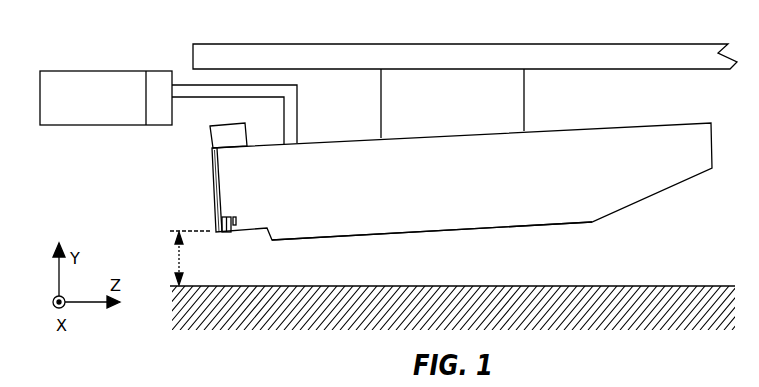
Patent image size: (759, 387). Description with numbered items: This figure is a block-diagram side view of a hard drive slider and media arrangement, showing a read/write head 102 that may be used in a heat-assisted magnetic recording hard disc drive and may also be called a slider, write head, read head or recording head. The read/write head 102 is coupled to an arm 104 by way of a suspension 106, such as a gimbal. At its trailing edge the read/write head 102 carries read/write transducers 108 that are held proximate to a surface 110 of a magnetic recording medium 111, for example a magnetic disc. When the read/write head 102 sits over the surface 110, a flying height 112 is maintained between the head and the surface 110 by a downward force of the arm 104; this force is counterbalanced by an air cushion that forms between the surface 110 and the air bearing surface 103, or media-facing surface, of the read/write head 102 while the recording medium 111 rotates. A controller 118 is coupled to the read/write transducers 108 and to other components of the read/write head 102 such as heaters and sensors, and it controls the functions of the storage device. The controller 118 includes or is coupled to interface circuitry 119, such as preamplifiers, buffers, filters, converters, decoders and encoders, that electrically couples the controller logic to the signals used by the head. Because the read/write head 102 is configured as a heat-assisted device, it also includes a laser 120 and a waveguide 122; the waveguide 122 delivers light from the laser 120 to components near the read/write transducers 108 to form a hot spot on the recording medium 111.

The read/write head 102 is at (627, 132).
The air bearing surface 103 is at (348, 236).
The arm 104 is at (668, 50).
The suspension 106 is at (524, 97).
The read/write transducers 108 is at (216, 218).
The surface 110 is at (630, 286).
The magnetic recording medium 111 is at (640, 320).
The flying height 112 is at (176, 258).
The controller 118 is at (88, 70).
The interface circuitry 119 is at (155, 70).
The laser 120 is at (228, 130).
The waveguide 122 is at (213, 165).